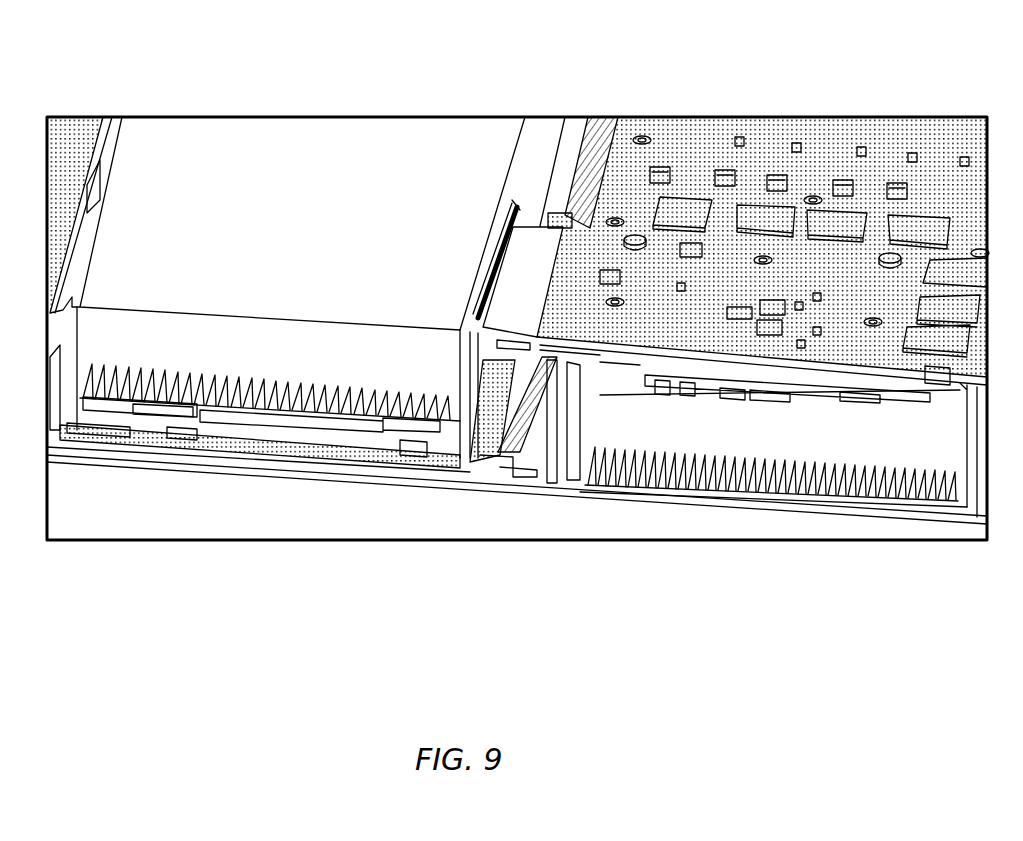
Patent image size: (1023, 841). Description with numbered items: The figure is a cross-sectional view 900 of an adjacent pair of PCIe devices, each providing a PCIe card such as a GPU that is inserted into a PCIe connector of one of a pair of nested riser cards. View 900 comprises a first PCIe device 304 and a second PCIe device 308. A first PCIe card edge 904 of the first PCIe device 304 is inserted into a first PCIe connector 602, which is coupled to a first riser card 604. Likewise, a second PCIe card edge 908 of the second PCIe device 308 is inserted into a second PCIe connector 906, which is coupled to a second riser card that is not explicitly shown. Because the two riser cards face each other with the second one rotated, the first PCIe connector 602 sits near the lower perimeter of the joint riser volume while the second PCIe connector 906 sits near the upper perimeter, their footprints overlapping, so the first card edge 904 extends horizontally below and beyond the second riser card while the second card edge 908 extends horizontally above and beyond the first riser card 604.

The view 900 is at (98, 52).
The first PCIe device 304 is at (286, 292).
The second PCIe device 308 is at (778, 439).
The first PCIe connector 602 is at (523, 473).
The first riser card 604 is at (552, 428).
The first PCIe card edge 904 is at (483, 463).
The second PCIe connector 906 is at (530, 335).
The second PCIe card edge 908 is at (555, 328).